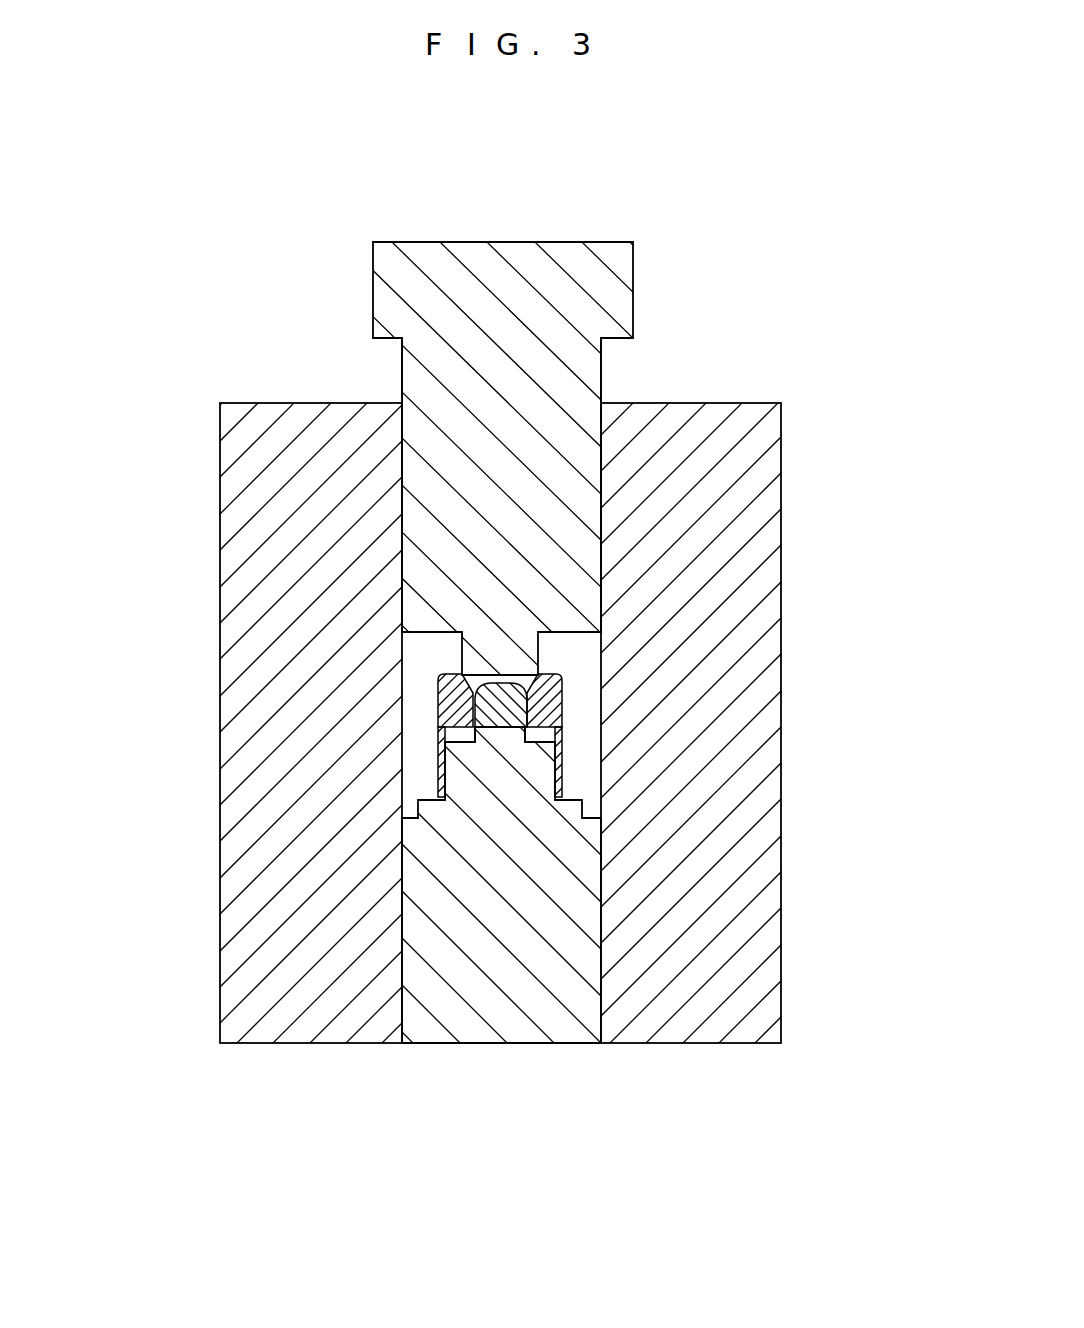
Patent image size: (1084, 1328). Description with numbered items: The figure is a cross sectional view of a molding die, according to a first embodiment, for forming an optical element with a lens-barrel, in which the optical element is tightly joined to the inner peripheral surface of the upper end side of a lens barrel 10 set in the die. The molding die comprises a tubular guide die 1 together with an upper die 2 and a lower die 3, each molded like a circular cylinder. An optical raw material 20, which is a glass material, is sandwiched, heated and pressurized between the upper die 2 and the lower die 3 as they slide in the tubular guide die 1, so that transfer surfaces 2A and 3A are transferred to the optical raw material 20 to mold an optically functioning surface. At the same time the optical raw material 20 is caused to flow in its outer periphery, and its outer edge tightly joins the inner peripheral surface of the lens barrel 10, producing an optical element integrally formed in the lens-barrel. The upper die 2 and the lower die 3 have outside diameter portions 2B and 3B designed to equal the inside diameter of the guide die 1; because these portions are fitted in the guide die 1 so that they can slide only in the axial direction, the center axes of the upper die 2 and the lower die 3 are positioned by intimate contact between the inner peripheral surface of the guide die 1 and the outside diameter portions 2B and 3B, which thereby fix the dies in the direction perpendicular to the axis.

The guide die 1 is at (695, 435).
The upper die 2 is at (557, 265).
The transfer surface 2A is at (314, 560).
The outside diameter portion 2B is at (393, 435).
The lower die 3 is at (552, 1015).
The transfer surface 3A is at (542, 664).
The outside diameter portion 3B is at (450, 953).
The lens barrel 10 is at (542, 664).
The optical raw material 20 is at (542, 664).